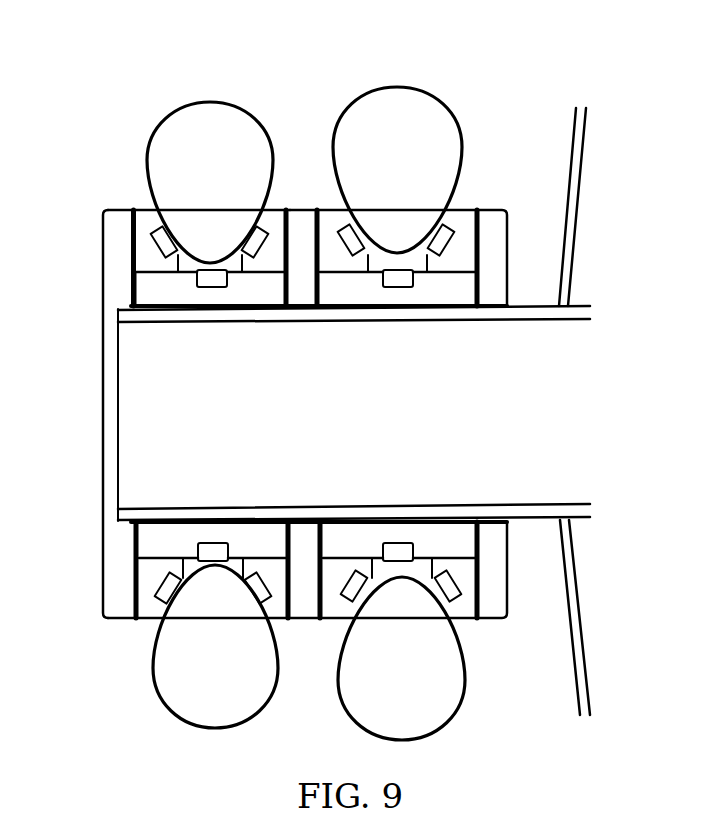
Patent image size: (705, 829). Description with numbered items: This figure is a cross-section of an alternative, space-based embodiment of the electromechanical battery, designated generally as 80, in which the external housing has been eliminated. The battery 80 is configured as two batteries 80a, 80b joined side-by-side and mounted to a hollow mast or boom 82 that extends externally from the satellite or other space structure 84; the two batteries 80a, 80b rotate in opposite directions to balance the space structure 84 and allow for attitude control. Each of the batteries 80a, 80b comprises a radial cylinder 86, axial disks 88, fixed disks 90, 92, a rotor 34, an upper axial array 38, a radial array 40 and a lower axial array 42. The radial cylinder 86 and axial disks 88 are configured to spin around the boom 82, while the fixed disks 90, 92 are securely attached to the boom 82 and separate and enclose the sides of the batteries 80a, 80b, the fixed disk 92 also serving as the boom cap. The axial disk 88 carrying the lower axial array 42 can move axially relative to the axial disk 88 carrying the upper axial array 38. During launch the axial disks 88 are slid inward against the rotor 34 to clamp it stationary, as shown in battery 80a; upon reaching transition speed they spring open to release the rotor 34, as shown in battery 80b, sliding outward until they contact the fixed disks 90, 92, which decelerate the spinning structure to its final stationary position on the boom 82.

The electromechanical battery 80 is at (315, 85).
The battery 80a is at (148, 87).
The battery 80b is at (457, 85).
The rotor 34 is at (442, 135).
The upper axial array 38 is at (157, 244).
The radial array 40 is at (212, 282).
The lower axial array 42 is at (262, 233).
The boom 82 is at (147, 430).
The space structure 84 is at (586, 155).
The radial cylinder 86 is at (143, 292).
The axial disks 88 is at (148, 218).
The fixed disk 90 is at (303, 217).
The fixed disk 92 is at (120, 580).